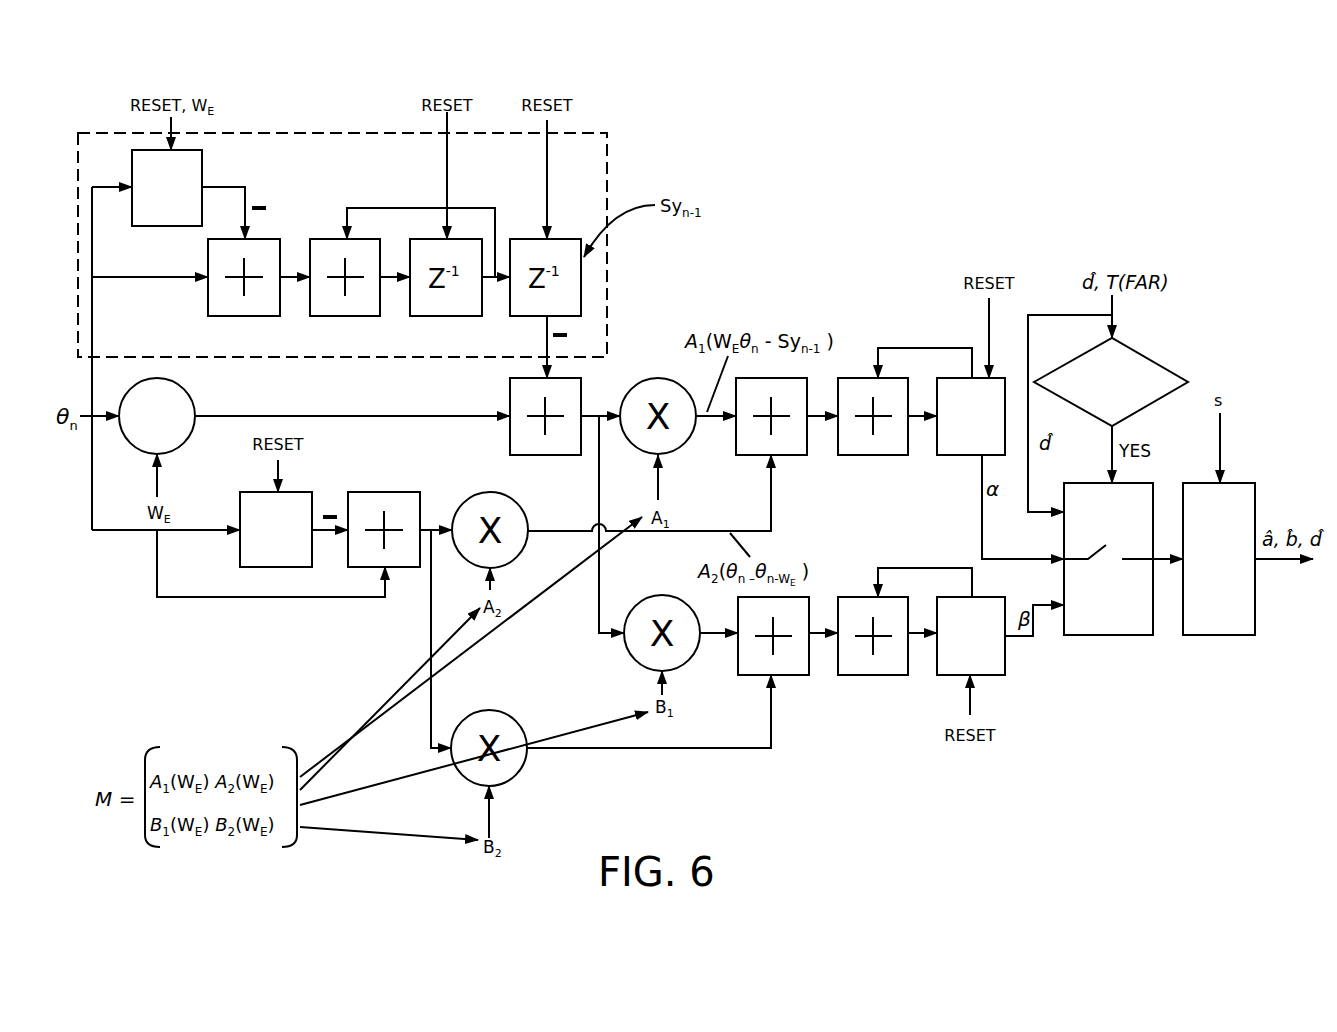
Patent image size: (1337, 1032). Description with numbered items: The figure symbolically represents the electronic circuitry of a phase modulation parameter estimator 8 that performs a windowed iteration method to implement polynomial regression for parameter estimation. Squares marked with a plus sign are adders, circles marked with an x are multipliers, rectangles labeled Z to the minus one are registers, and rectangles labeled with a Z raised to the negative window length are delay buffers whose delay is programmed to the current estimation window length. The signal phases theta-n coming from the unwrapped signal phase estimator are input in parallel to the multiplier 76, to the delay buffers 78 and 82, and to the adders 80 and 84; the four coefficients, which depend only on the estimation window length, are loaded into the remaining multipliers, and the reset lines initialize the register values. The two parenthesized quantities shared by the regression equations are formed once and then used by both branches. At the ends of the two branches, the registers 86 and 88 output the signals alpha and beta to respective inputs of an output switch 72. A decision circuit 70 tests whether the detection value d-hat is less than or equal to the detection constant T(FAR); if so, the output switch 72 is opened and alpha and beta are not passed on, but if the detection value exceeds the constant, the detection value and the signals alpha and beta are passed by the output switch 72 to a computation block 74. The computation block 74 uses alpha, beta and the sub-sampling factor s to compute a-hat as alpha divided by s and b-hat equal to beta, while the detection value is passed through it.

The phase modulation parameter estimator 8 is at (940, 147).
The decision circuit 70 is at (1150, 358).
The output switch 72 is at (1132, 635).
The computation block 74 is at (1233, 635).
The multiplier 76 is at (190, 400).
The delay buffer 78 is at (202, 176).
The adder 80 is at (208, 295).
The delay buffer 82 is at (240, 508).
The adder 84 is at (400, 492).
The register 86 is at (962, 455).
The register 88 is at (1007, 660).